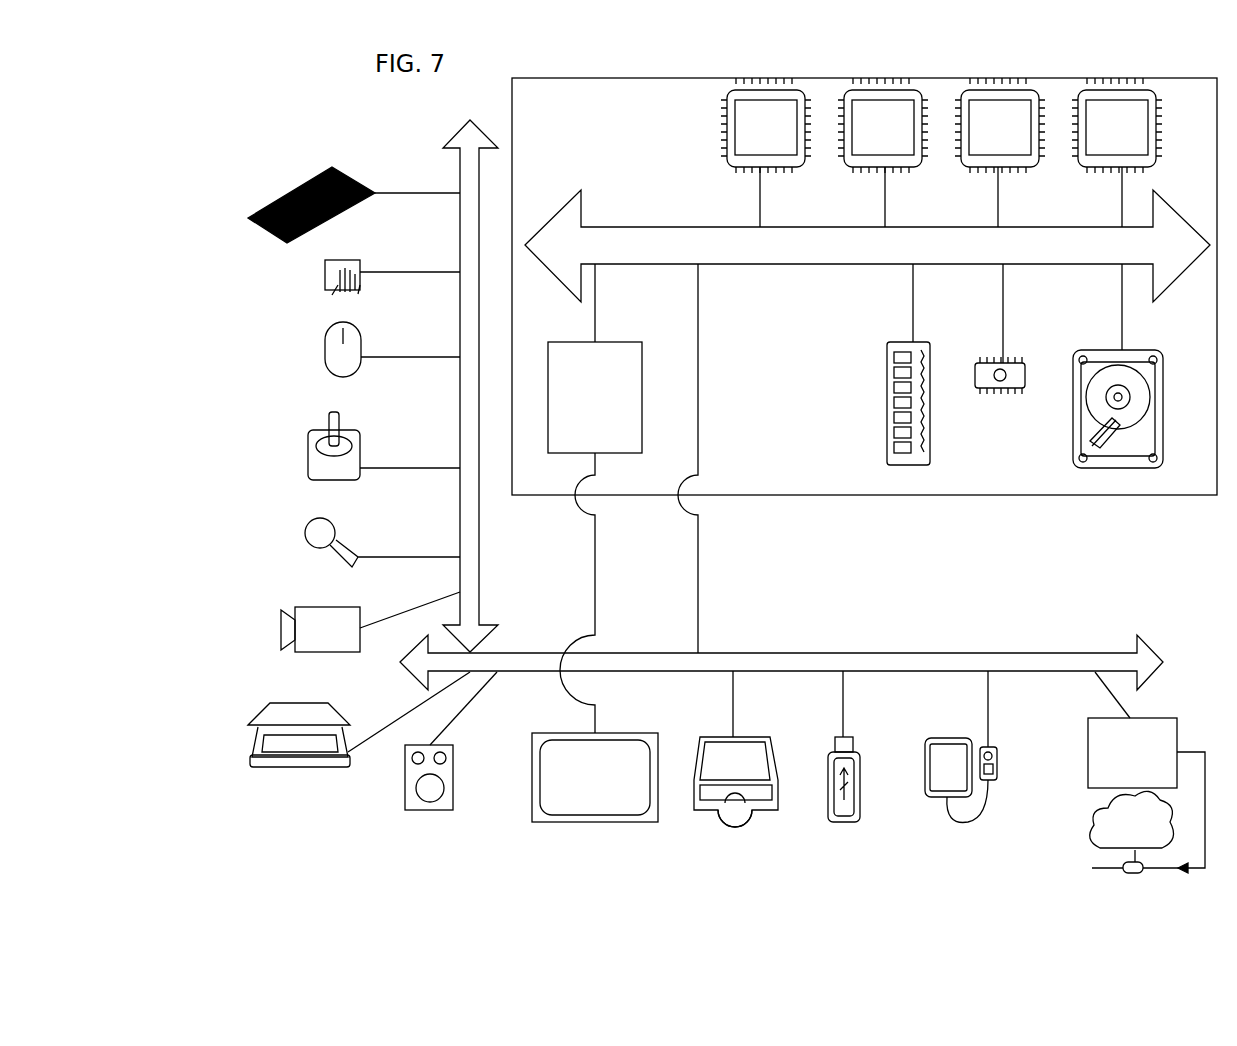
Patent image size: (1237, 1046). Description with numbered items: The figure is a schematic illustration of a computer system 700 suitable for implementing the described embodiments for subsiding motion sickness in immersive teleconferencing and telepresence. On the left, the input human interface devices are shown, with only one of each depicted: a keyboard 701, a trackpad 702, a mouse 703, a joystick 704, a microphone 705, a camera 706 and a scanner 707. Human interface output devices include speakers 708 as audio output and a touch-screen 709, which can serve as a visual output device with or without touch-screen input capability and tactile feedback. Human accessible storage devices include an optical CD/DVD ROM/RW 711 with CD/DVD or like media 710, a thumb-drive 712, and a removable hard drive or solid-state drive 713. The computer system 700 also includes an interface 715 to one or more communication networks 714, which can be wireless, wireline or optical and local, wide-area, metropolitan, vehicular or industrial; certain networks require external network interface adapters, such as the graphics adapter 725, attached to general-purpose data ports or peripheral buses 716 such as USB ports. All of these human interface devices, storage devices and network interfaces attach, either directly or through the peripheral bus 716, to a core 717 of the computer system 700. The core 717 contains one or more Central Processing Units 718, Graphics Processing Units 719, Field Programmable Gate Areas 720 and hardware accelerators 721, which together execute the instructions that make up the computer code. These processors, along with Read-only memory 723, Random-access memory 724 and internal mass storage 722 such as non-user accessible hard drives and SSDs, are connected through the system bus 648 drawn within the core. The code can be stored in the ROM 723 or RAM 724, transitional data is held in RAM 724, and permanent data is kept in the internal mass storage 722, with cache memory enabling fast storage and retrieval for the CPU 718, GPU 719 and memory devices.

The computer system 700 is at (270, 103).
The system bus 648 is at (867, 246).
The keyboard 701 is at (260, 223).
The trackpad 702 is at (318, 283).
The mouse 703 is at (318, 351).
The joystick 704 is at (306, 470).
The microphone 705 is at (306, 538).
The camera 706 is at (280, 636).
The scanner 707 is at (258, 756).
The speakers 708 is at (428, 810).
The touch-screen 709 is at (593, 822).
The CD/DVD media 710 is at (718, 815).
The CD/DVD ROM/RW 711 is at (770, 808).
The thumb-drive 712 is at (840, 822).
The removable hard drive or solid-state drive 713 is at (925, 800).
The communication networks 714 is at (1092, 838).
The interface 715 is at (1146, 772).
The peripheral bus 716 is at (460, 148).
The core 717 is at (860, 495).
The Central Processing Unit 718 is at (766, 152).
The Graphics Processing Unit 719 is at (883, 152).
The Field Programmable Gate Area 720 is at (1000, 152).
The hardware accelerator 721 is at (1117, 152).
The internal mass storage 722 is at (1077, 350).
The Read-only memory 723 is at (990, 394).
The Random-access memory 724 is at (885, 394).
The graphics adapter 725 is at (595, 498).